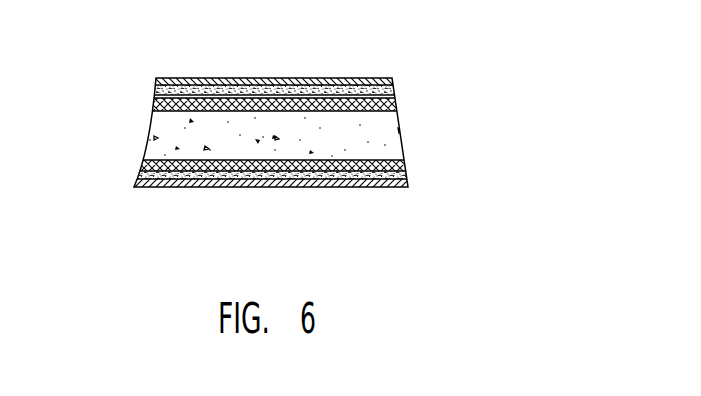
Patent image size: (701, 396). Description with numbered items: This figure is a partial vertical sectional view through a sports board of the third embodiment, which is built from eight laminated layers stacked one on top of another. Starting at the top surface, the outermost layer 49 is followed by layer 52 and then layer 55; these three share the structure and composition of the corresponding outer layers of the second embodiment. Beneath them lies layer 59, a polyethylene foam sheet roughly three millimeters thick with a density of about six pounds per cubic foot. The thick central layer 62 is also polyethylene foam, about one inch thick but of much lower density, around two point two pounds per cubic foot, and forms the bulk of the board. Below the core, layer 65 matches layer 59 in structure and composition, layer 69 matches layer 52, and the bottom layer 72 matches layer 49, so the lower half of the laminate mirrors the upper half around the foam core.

The layer 49 is at (393, 81).
The layer 52 is at (393, 87).
The layer 55 is at (394, 93).
The layer 59 is at (396, 106).
The layer 62 is at (405, 123).
The layer 65 is at (405, 163).
The layer 69 is at (410, 175).
The layer 72 is at (412, 183).